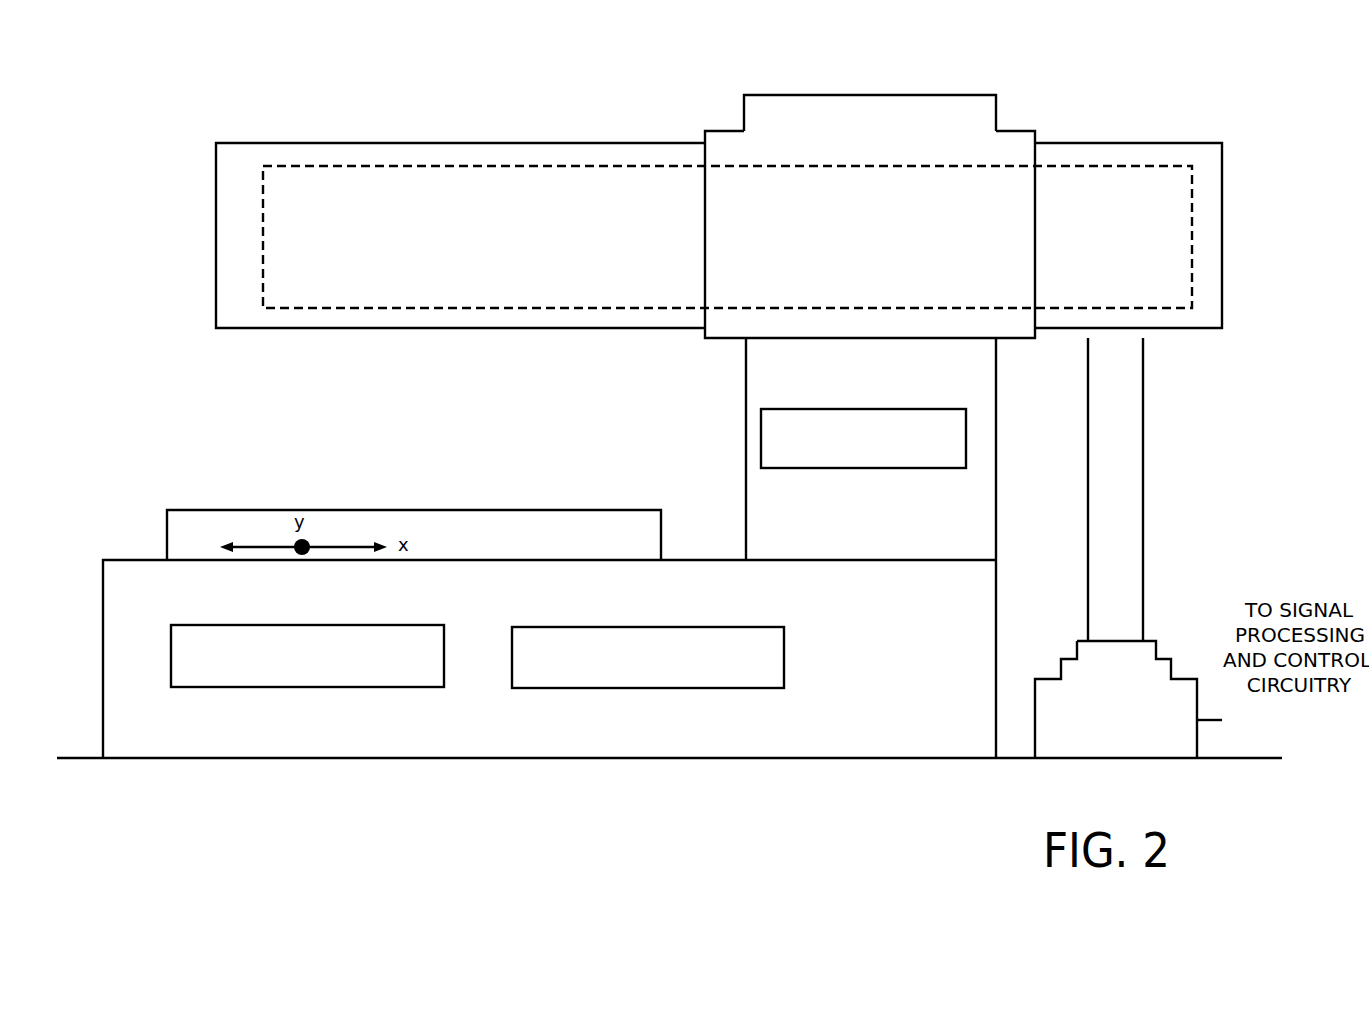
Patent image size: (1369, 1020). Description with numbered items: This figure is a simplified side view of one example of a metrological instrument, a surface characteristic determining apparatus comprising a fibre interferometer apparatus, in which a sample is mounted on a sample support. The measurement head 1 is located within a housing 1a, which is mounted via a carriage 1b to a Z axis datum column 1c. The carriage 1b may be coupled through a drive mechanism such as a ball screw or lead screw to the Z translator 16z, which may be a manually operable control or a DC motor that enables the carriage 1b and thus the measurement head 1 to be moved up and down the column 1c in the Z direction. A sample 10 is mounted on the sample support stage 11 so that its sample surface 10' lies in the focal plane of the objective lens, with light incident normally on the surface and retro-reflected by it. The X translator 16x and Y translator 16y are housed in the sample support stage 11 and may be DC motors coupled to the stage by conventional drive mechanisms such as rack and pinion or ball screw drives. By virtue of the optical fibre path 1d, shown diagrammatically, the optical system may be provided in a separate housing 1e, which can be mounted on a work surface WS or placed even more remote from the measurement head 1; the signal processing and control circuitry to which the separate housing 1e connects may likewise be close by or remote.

The measurement head 1 is at (1097, 164).
The housing 1a is at (292, 143).
The carriage 1b is at (1013, 131).
The Z axis datum column 1c is at (886, 95).
The optical fibre path 1d is at (1145, 475).
The separate housing 1e is at (1185, 679).
The sample 10 is at (414, 512).
The sample surface 10' is at (410, 493).
The sample support stage 11 is at (104, 656).
The X translator 16x is at (446, 656).
The Y translator 16y is at (785, 657).
The Z translator 16z is at (900, 409).
The work surface WS is at (195, 757).